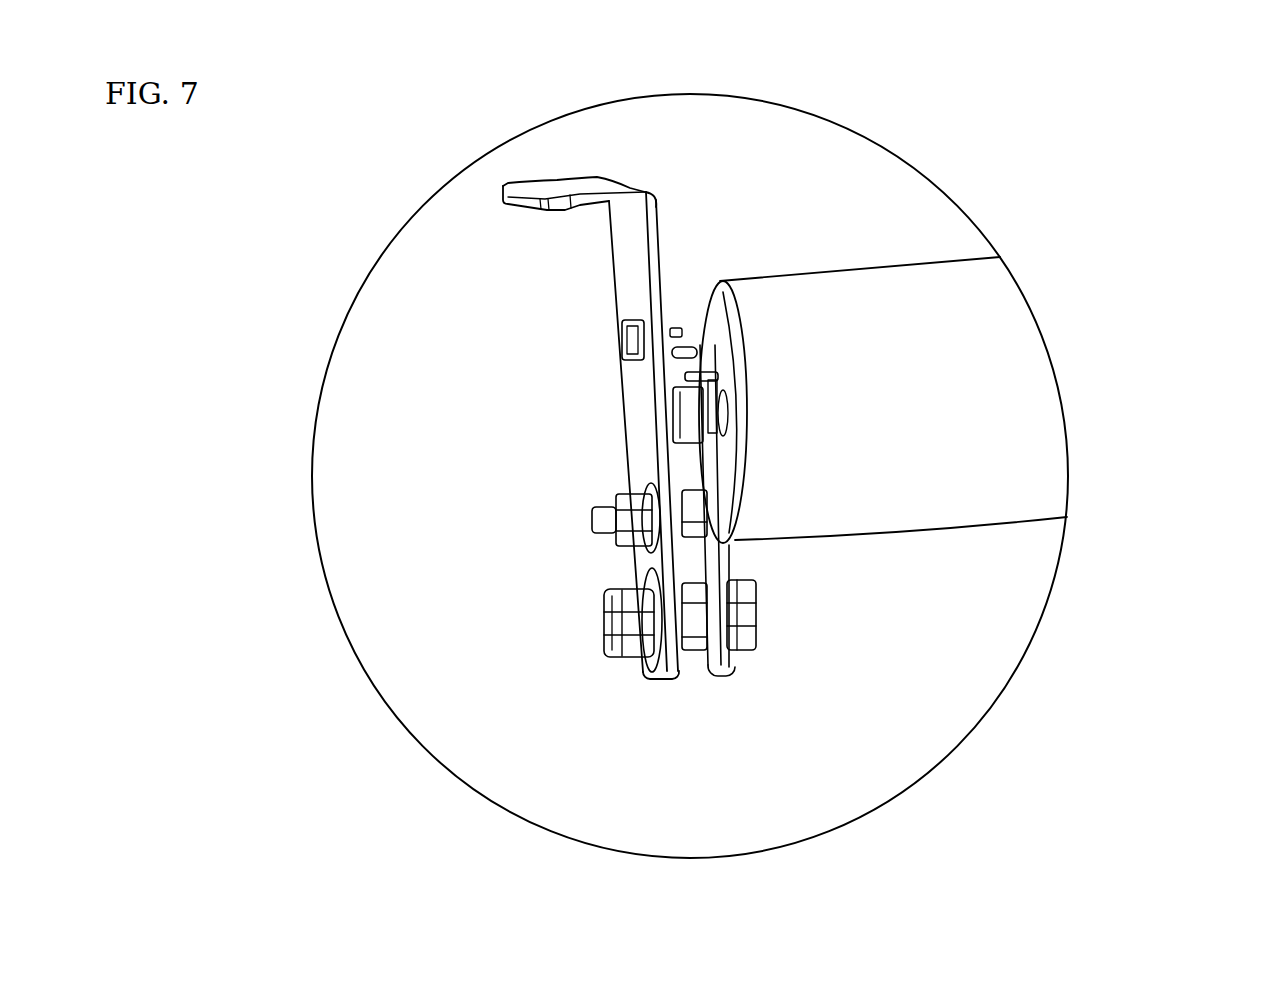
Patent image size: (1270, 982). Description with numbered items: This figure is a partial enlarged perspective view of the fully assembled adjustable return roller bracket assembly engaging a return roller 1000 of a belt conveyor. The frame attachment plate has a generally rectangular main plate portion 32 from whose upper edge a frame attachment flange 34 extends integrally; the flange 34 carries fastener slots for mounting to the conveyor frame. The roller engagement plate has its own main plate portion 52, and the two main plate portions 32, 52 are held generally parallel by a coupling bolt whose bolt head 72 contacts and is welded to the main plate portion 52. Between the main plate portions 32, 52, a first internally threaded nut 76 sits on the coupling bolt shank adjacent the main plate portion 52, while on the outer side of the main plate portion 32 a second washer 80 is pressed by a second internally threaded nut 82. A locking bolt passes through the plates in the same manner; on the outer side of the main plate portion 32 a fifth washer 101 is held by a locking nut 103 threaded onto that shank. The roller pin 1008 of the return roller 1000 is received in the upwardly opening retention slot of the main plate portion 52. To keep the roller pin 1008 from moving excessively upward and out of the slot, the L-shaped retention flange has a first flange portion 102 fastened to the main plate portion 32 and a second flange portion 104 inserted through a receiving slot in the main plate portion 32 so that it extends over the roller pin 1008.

The main plate portion 32 is at (640, 445).
The frame attachment flange 34 is at (505, 184).
The main plate portion 52 is at (727, 567).
The bolt head 72 is at (745, 623).
The first internally threaded nut 76 is at (697, 655).
The second washer 80 is at (660, 680).
The second internally threaded nut 82 is at (610, 656).
The fifth washer 101 is at (632, 575).
The first flange portion 102 is at (622, 346).
The locking nut 103 is at (632, 536).
The second flange portion 104 is at (679, 350).
The return roller 1000 is at (1033, 427).
The roller pin 1008 is at (718, 387).